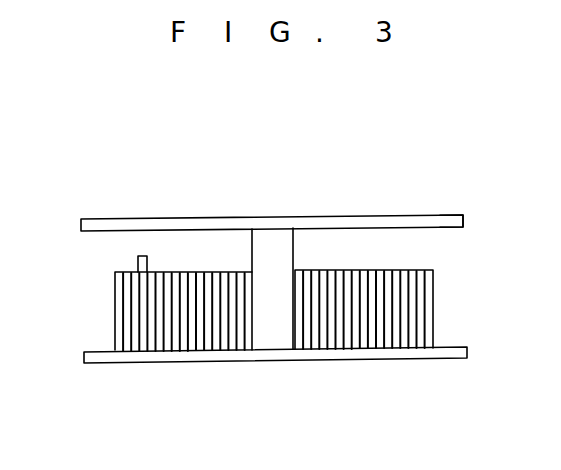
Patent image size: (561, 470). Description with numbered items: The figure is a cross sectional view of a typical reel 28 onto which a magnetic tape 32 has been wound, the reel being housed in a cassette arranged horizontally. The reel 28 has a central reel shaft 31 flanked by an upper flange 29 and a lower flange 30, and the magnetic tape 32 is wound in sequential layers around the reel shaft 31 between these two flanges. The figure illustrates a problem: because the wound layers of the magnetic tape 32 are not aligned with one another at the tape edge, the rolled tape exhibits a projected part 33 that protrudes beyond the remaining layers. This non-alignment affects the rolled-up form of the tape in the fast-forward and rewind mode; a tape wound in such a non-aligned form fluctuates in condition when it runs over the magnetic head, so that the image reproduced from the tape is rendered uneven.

The reel 28 is at (200, 218).
The upper flange 29 is at (455, 209).
The lower flange 30 is at (452, 358).
The reel shaft 31 is at (280, 325).
The magnetic tape 32 is at (432, 290).
The projected part 33 is at (138, 256).